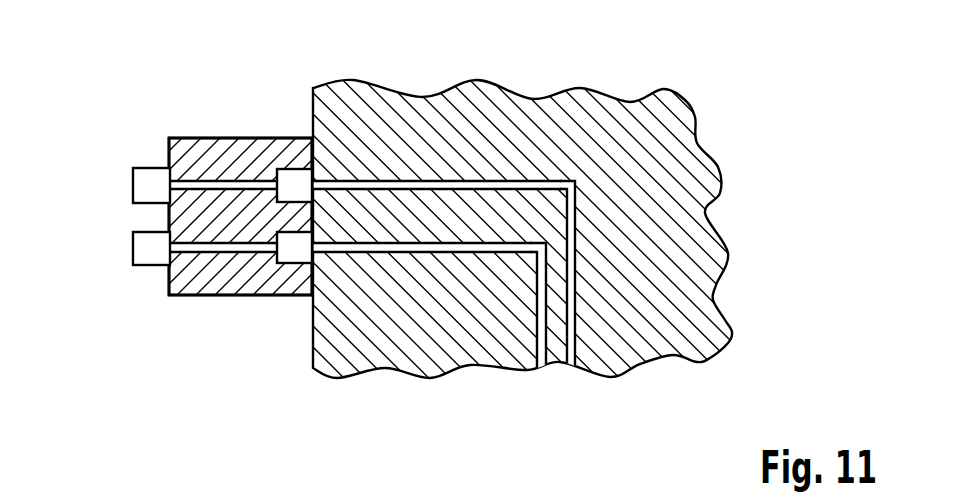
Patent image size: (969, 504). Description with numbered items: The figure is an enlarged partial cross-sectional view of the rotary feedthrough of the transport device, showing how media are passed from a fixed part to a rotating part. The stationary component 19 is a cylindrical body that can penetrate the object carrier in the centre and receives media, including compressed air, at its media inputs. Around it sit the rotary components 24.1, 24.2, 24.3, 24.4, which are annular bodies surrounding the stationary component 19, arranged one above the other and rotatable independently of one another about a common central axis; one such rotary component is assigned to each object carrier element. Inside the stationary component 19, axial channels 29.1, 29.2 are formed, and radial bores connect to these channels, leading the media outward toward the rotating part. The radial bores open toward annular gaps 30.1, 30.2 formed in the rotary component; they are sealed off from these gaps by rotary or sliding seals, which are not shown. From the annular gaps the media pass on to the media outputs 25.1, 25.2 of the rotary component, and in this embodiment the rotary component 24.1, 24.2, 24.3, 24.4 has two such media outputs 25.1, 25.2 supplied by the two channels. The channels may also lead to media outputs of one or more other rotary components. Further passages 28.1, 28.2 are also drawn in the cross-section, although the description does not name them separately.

The stationary component 19 is at (650, 167).
The rotary component 24.1 is at (246, 160).
The rotary component 24.2 is at (240, 216).
The rotary component 24.3 is at (240, 216).
The rotary component 24.4 is at (240, 216).
The media output 25.1 is at (150, 248).
The media output 25.2 is at (150, 185).
The vertical conductor section 28.1 is at (542, 312).
The vertical conductor section 28.2 is at (572, 233).
The axial channel 29.1 is at (395, 248).
The axial channel 29.2 is at (462, 187).
The annular gap 30.1 is at (293, 248).
The annular gap 30.2 is at (295, 188).